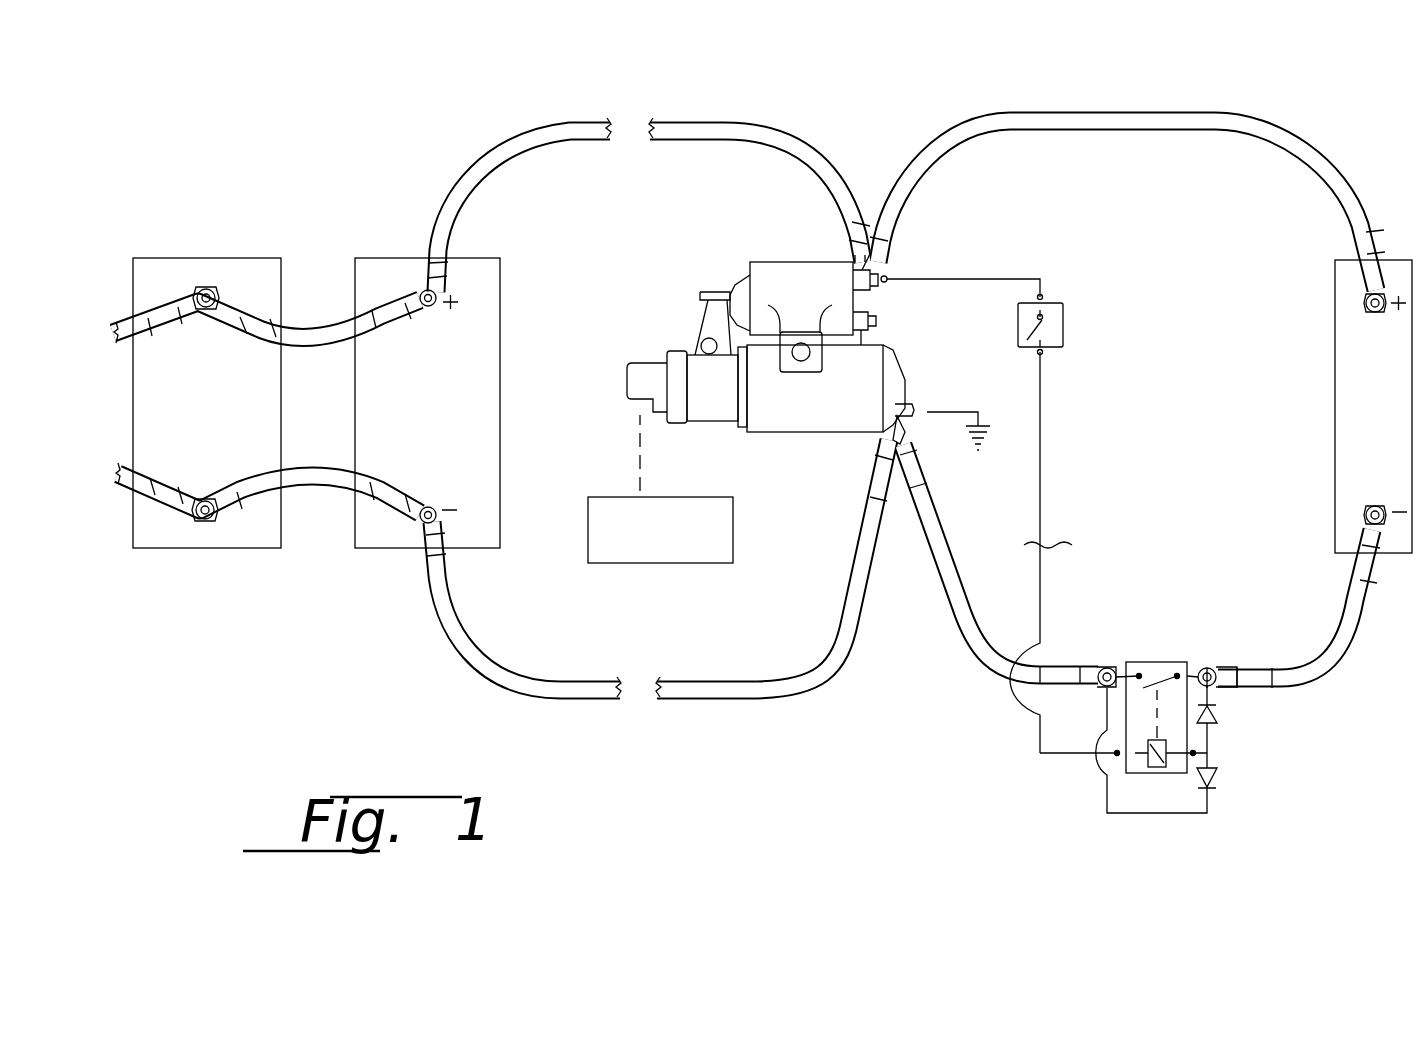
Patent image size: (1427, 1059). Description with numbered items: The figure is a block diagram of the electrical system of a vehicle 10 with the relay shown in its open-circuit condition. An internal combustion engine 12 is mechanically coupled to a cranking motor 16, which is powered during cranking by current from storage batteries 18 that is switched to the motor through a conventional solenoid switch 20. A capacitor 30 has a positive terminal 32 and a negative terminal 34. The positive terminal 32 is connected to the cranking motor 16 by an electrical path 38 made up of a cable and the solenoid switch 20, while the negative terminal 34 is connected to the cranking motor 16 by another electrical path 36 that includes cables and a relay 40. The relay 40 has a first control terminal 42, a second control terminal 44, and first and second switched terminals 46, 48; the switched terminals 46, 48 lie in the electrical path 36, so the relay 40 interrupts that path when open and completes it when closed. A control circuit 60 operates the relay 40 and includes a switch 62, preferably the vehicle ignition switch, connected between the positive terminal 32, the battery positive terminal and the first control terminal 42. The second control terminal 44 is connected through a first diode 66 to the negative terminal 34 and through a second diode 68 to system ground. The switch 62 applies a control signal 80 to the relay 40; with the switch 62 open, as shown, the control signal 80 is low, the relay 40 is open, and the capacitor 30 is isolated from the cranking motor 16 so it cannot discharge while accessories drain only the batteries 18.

The vehicle 10 is at (640, 229).
The internal combustion engine 12 is at (645, 563).
The cranking motor 16 is at (792, 434).
The storage batteries 18 is at (208, 258).
The solenoid switch 20 is at (790, 262).
The capacitor 30 is at (1350, 392).
The positive terminal 32 is at (1364, 300).
The negative terminal 34 is at (1365, 513).
The electrical path 36 is at (1330, 660).
The electrical path 38 is at (1157, 113).
The relay 40 is at (1160, 662).
The first control terminal 42 is at (1118, 760).
The second control terminal 44 is at (1209, 748).
The first switched terminal 46 is at (1105, 668).
The second switched terminal 48 is at (1207, 668).
The control circuit 60 is at (1116, 455).
The switch 62 is at (1058, 303).
The first diode 66 is at (1220, 708).
The second diode 68 is at (1216, 780).
The control signal 80 is at (1118, 576).